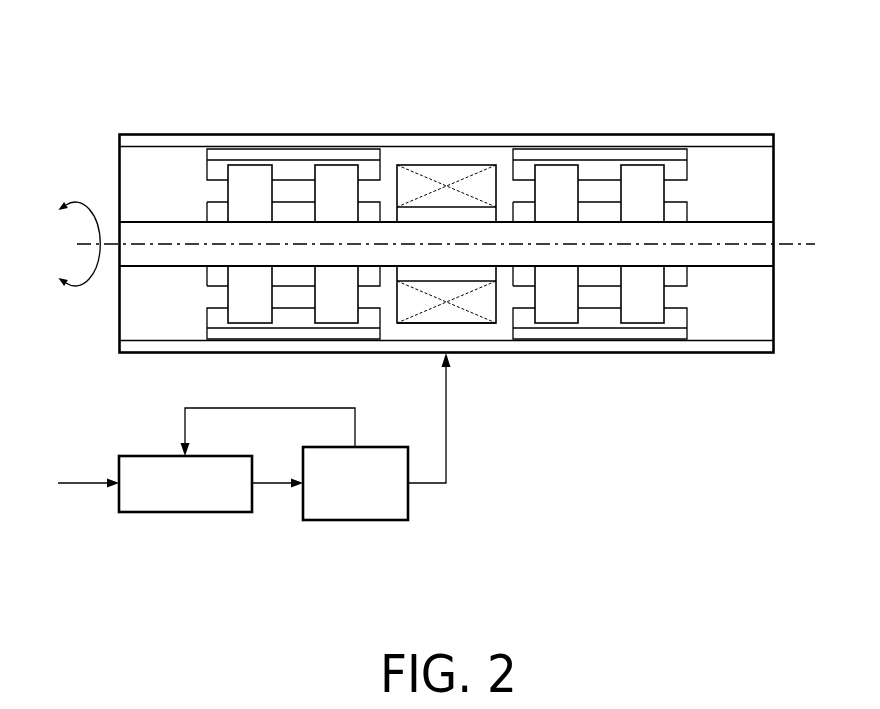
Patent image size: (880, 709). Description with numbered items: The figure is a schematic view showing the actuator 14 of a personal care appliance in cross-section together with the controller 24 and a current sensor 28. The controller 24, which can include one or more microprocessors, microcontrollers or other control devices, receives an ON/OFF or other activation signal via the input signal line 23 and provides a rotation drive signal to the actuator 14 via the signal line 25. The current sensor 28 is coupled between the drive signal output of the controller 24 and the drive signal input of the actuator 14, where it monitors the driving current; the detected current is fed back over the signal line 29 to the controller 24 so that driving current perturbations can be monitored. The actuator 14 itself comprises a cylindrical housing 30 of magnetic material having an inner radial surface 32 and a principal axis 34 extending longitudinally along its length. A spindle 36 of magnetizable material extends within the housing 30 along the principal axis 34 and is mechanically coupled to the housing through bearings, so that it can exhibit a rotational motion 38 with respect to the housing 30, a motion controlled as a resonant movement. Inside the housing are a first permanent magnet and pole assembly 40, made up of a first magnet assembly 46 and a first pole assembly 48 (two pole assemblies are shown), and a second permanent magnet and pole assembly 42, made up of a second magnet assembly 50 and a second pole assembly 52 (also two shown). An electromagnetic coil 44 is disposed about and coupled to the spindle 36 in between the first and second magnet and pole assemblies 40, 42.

The actuator 14 is at (739, 386).
The input signal line 23 is at (84, 483).
The controller 24 is at (185, 512).
The signal line 25 is at (270, 483).
The current sensor 28 is at (355, 520).
The signal line 29 is at (185, 430).
The cylindrical housing 30 is at (751, 140).
The inner radial surface 32 is at (480, 325).
The principal axis 34 is at (800, 246).
The spindle 36 is at (765, 232).
The rotational motion 38 is at (80, 203).
The first permanent magnet and pole assembly 40 is at (298, 85).
The second permanent magnet and pole assembly 42 is at (605, 87).
The electromagnetic coil 44 is at (447, 165).
The first magnet assembly 46 is at (218, 152).
The first pole assembly 48 is at (251, 165).
The second magnet assembly 50 is at (675, 152).
The second pole assembly 52 is at (557, 165).